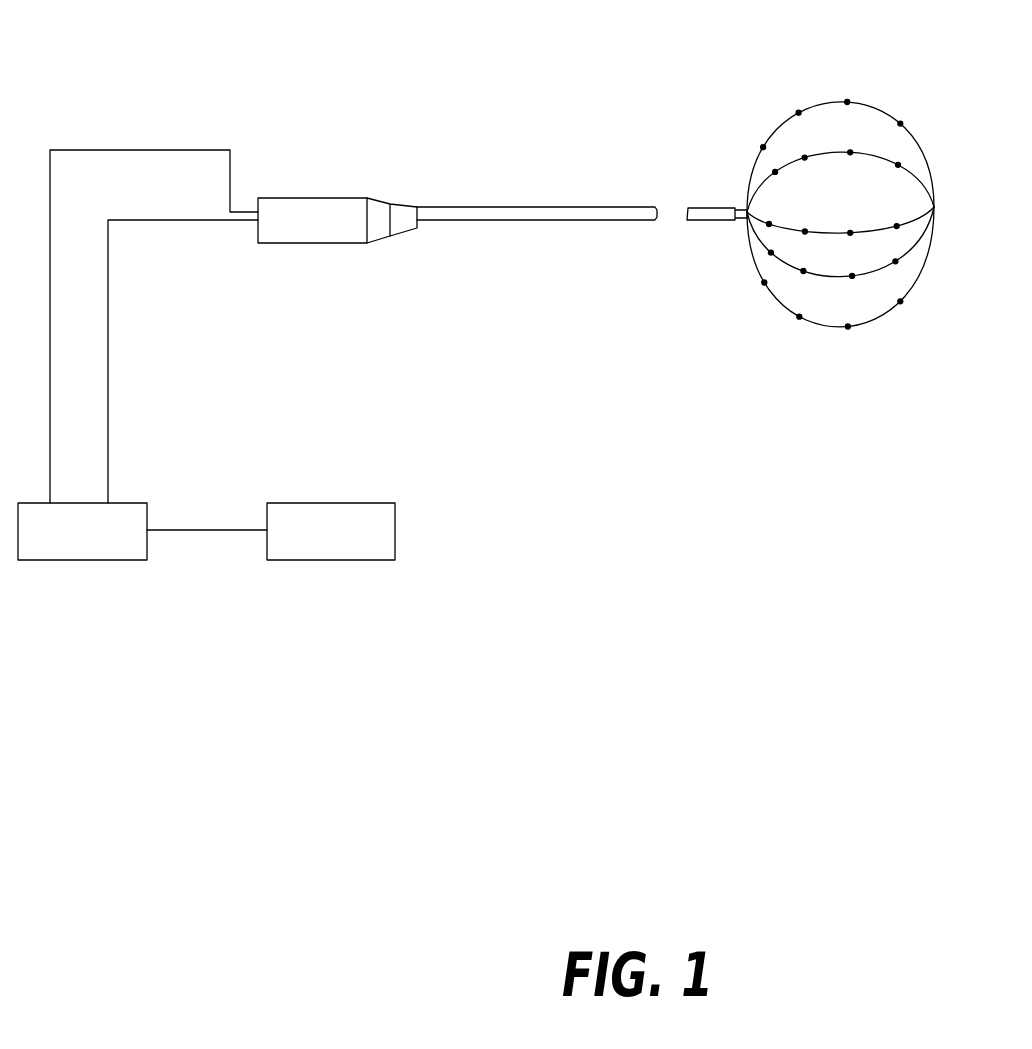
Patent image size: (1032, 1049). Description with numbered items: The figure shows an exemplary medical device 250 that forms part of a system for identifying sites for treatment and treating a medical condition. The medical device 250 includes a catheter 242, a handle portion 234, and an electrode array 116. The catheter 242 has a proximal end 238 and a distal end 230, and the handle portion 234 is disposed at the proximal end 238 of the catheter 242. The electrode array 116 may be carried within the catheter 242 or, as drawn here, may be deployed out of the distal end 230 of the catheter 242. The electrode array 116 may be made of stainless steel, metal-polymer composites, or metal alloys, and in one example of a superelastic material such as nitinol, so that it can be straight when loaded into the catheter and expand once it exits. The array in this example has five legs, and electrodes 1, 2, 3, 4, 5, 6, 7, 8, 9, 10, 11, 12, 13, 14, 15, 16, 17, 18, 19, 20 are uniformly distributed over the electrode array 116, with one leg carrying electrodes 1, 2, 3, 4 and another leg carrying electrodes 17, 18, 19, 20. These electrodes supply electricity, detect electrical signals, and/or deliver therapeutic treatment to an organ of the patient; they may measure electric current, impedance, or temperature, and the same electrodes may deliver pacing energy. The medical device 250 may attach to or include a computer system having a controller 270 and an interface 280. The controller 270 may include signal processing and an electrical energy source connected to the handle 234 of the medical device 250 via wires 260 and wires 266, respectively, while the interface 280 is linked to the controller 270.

The electrode array 116 is at (836, 51).
The electrode 1 is at (763, 147).
The electrode 2 is at (798, 113).
The electrode 3 is at (847, 102).
The electrode 4 is at (900, 124).
The electrode 5 is at (775, 172).
The electrode 6 is at (805, 158).
The electrode 7 is at (850, 152).
The electrode 8 is at (898, 165).
The electrode 9 is at (769, 224).
The electrode 10 is at (805, 231).
The electrode 11 is at (850, 233).
The electrode 12 is at (897, 226).
The electrode 13 is at (771, 253).
The electrode 14 is at (803, 271).
The electrode 15 is at (852, 276).
The electrode 16 is at (895, 261).
The electrode 17 is at (764, 283).
The electrode 18 is at (799, 317).
The electrode 19 is at (848, 326).
The electrode 20 is at (900, 301).
The distal end 230 is at (745, 208).
The handle portion 234 is at (315, 198).
The proximal end 238 is at (417, 207).
The catheter 242 is at (500, 207).
The medical device 250 is at (457, 176).
The wires 260 is at (210, 150).
The wires 266 is at (196, 222).
The controller 270 is at (105, 560).
The interface 280 is at (340, 560).